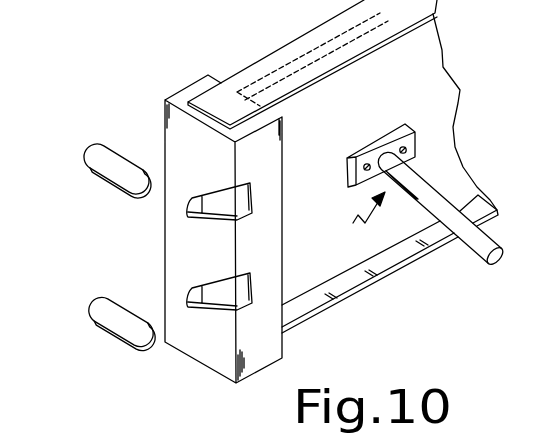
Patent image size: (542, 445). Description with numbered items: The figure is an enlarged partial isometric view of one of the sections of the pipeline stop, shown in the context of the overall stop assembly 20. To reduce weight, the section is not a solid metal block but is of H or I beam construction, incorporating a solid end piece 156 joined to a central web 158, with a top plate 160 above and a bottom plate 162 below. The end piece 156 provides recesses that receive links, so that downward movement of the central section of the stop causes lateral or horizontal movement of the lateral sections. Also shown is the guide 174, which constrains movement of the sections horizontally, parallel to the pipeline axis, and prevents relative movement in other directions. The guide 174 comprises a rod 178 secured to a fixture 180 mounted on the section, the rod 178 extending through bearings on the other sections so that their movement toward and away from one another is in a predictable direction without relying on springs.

The rail assembly body 20 is at (487, 112).
The end piece 156 is at (180, 273).
The central web 158 is at (333, 192).
The top plate 160 is at (281, 58).
The bottom plate 162 is at (362, 282).
The guide 174 is at (357, 222).
The rod 178 is at (441, 201).
The fixture 180 is at (372, 154).